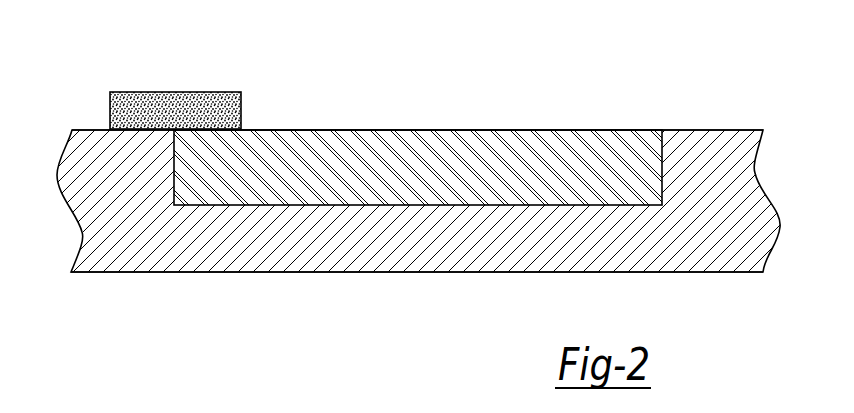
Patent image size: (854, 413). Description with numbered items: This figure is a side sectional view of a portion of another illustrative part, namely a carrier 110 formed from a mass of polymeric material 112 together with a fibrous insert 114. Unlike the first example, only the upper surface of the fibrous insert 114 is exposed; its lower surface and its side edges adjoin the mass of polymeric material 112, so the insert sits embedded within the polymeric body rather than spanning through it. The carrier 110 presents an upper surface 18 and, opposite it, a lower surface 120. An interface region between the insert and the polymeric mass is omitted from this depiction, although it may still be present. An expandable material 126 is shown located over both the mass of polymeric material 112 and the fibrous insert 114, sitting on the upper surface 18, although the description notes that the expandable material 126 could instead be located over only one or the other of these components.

The carrier 110 is at (143, 320).
The mass of polymeric material 112 is at (740, 242).
The fibrous insert 114 is at (593, 157).
The upper surface 18 is at (351, 131).
The bottom surface 120 is at (235, 272).
The expandable material 126 is at (142, 92).